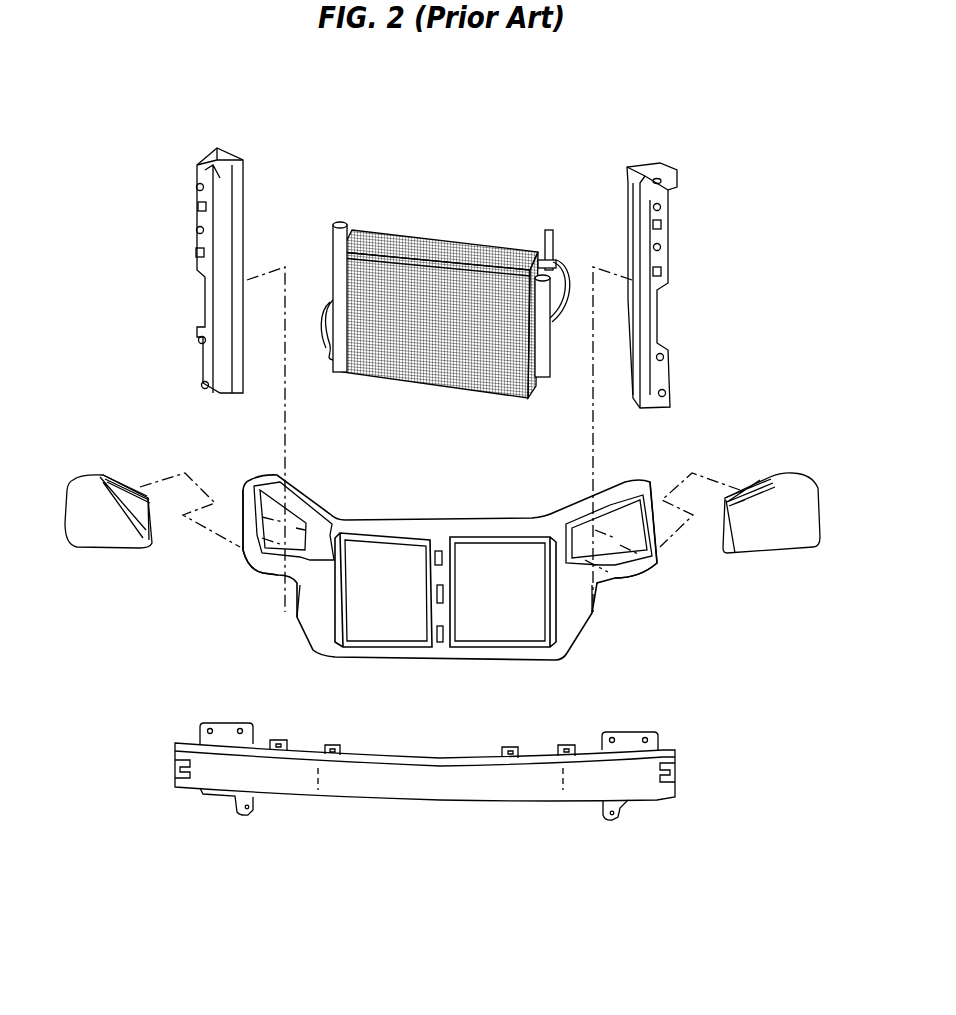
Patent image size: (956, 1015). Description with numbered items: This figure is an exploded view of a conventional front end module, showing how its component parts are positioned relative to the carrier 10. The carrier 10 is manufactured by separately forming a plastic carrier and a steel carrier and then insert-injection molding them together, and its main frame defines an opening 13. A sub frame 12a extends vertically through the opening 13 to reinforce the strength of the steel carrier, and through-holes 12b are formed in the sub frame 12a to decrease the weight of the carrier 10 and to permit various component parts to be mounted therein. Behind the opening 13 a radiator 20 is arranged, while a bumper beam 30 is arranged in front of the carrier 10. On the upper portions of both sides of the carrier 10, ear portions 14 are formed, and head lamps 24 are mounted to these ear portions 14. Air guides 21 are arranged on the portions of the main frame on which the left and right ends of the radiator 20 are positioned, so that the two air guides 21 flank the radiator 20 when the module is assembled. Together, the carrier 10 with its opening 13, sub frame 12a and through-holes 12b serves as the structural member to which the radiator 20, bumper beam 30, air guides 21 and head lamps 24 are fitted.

The carrier 10 is at (262, 604).
The sub frame 12a is at (445, 555).
The through-holes 12b is at (446, 598).
The opening 13 is at (360, 622).
The ear portions 14 is at (240, 550).
The radiator 20 is at (427, 212).
The air guides 21 is at (222, 152).
The head lamps 24 is at (80, 490).
The bumper beam 30 is at (400, 826).